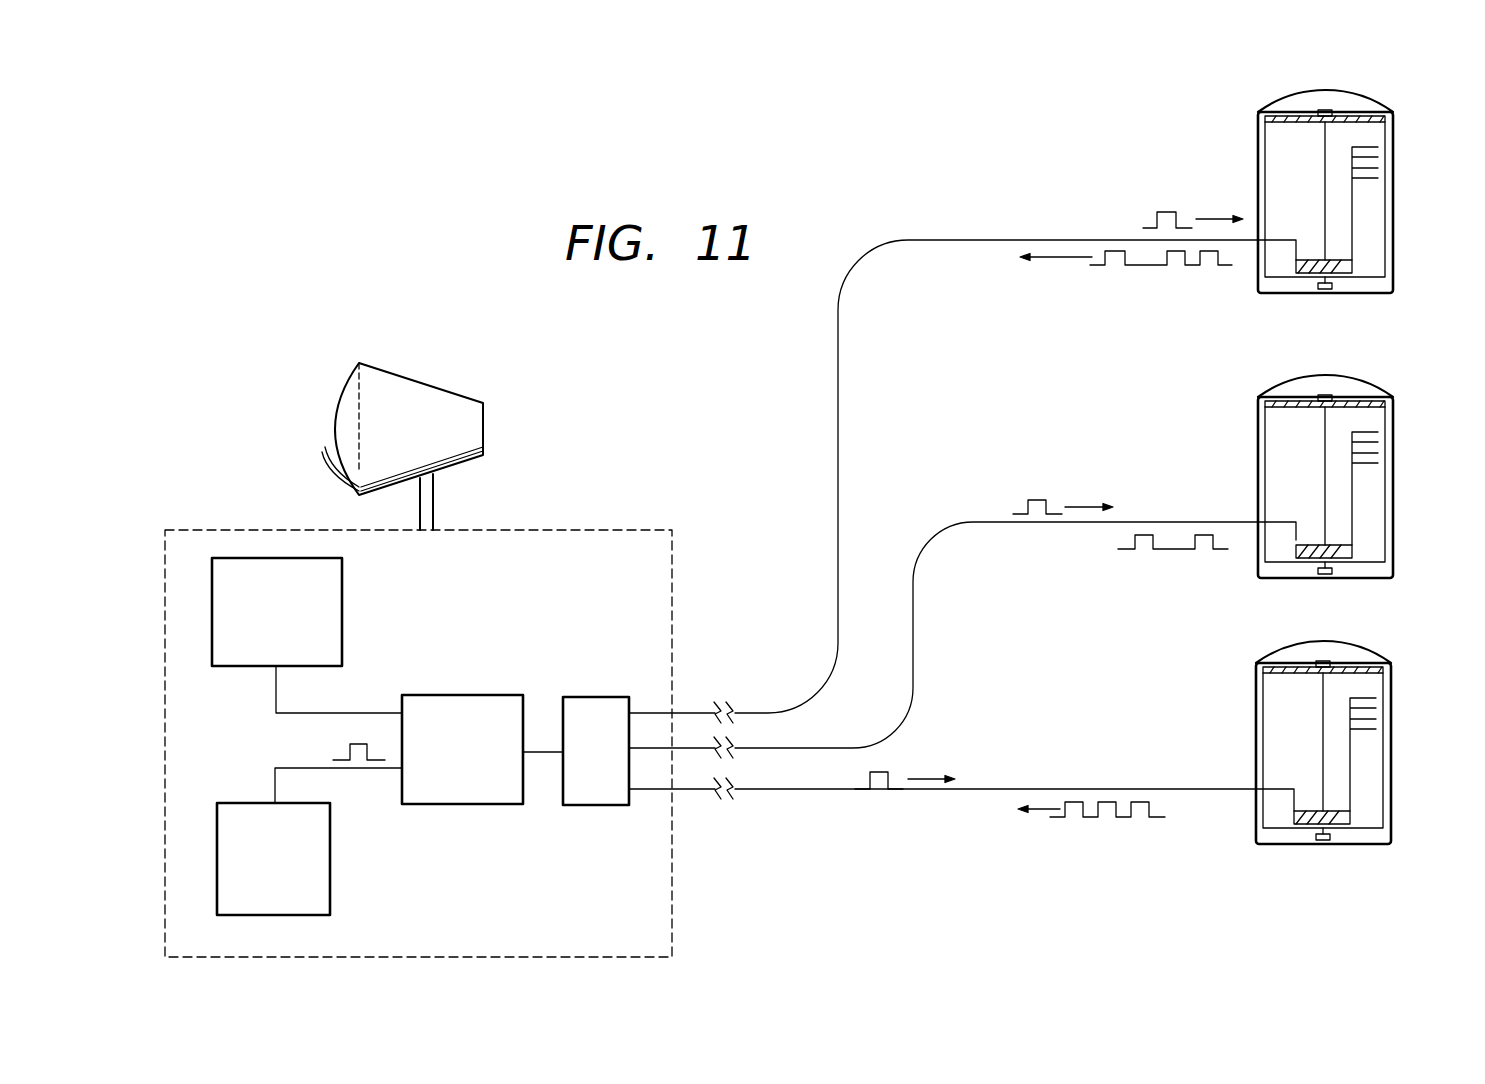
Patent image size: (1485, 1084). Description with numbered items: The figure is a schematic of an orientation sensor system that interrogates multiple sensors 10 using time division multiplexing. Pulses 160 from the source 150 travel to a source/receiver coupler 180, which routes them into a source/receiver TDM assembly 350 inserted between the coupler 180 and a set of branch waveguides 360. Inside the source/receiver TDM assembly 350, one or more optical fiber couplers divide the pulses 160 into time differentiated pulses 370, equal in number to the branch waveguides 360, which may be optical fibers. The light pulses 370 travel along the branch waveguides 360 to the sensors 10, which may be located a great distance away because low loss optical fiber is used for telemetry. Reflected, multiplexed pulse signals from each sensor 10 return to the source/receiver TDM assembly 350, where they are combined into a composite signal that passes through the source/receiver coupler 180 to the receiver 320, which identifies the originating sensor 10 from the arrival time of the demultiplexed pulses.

The sensor 10 is at (1393, 197).
The source 150 is at (330, 850).
The pulses 160 is at (328, 745).
The source/receiver coupler 180 is at (448, 695).
The receiver 320 is at (342, 615).
The source/receiver TDM assembly 350 is at (585, 697).
The branch waveguides 360 is at (838, 450).
The time differentiated pulses 370 is at (1160, 198).